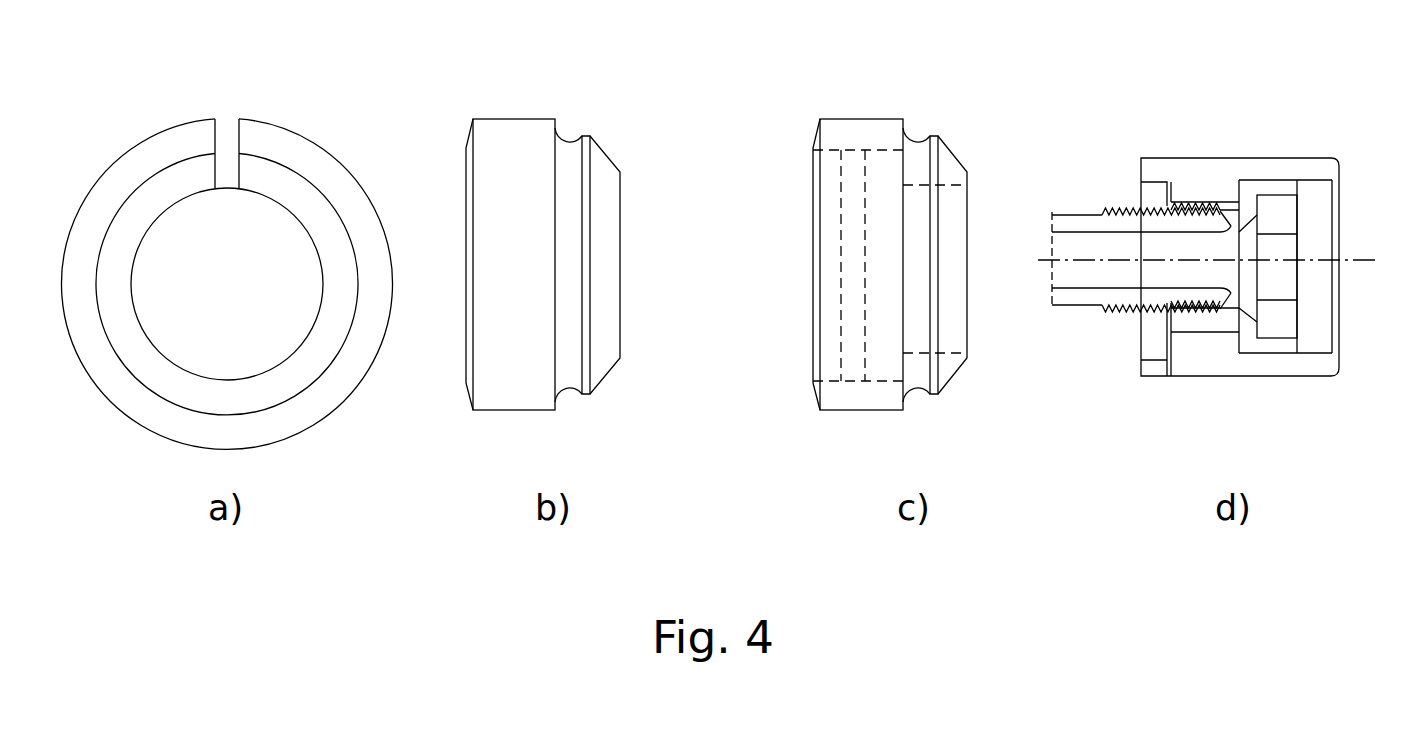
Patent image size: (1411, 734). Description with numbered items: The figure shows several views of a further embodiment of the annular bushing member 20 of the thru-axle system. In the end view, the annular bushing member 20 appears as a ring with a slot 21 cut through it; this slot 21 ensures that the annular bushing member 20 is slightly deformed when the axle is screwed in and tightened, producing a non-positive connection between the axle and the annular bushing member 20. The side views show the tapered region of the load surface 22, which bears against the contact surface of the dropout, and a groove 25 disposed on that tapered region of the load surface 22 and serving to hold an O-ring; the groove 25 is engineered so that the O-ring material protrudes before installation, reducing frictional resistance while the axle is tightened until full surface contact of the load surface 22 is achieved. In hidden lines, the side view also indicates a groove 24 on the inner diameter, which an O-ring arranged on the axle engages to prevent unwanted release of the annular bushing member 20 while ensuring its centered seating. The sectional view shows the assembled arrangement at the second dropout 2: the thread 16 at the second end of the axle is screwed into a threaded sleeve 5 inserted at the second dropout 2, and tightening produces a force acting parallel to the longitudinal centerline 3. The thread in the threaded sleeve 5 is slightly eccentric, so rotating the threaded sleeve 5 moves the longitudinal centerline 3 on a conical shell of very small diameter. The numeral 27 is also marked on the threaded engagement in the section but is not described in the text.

The second dropout 2 is at (1203, 167).
The longitudinal centerline 3 is at (1363, 262).
The threaded sleeve 5 is at (1318, 224).
The thread 16 is at (1127, 212).
The annular bushing member 20 is at (493, 137).
The slot 21 is at (229, 142).
The load surface 22 is at (612, 155).
The groove 24 is at (850, 143).
The groove 25 is at (566, 137).
The internal thread 27 is at (1190, 310).